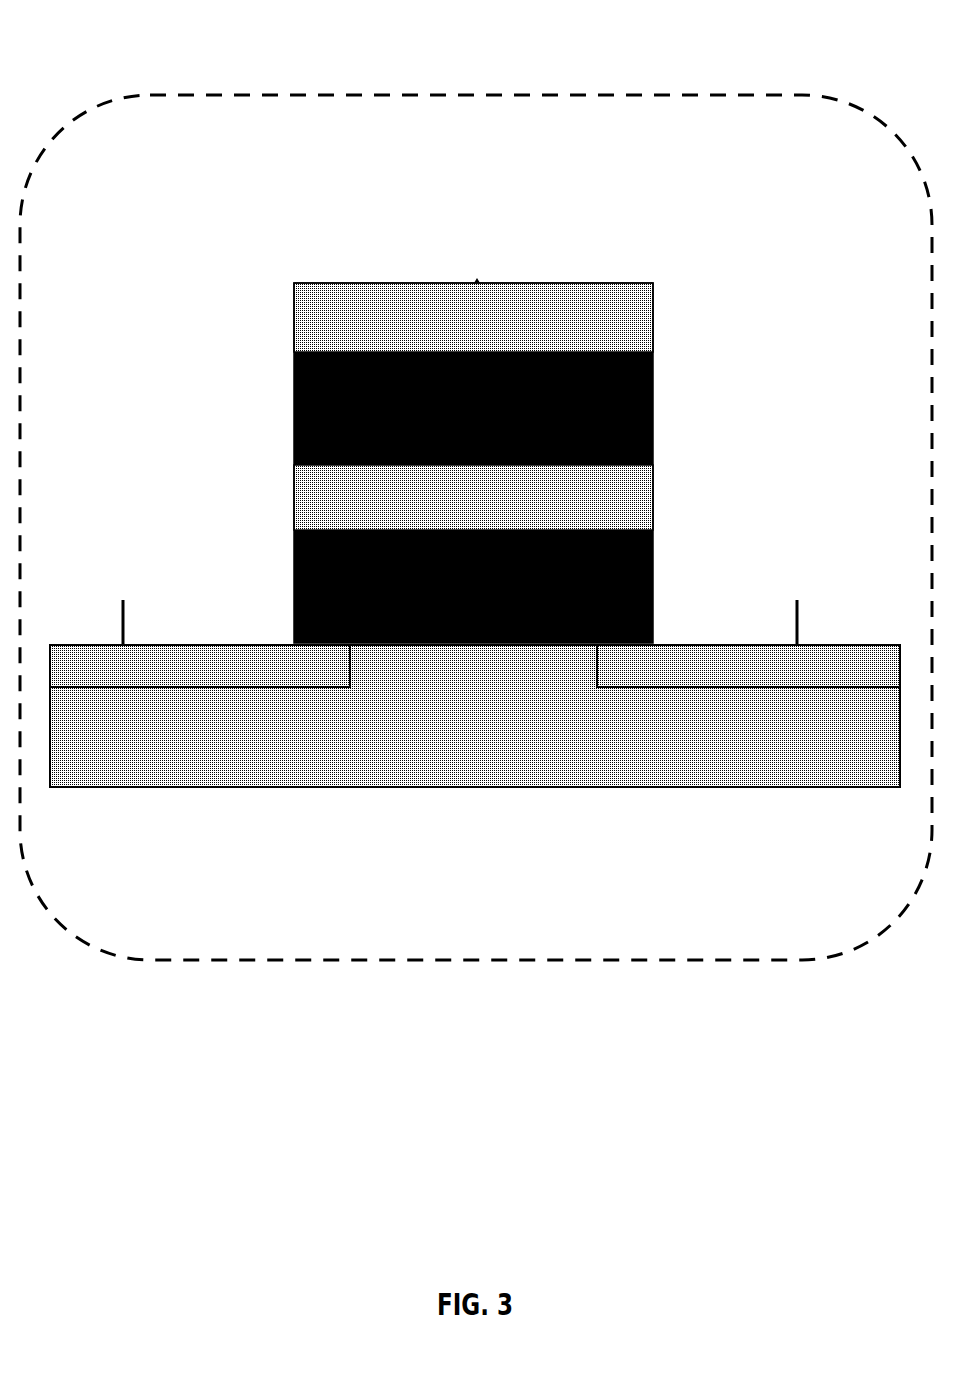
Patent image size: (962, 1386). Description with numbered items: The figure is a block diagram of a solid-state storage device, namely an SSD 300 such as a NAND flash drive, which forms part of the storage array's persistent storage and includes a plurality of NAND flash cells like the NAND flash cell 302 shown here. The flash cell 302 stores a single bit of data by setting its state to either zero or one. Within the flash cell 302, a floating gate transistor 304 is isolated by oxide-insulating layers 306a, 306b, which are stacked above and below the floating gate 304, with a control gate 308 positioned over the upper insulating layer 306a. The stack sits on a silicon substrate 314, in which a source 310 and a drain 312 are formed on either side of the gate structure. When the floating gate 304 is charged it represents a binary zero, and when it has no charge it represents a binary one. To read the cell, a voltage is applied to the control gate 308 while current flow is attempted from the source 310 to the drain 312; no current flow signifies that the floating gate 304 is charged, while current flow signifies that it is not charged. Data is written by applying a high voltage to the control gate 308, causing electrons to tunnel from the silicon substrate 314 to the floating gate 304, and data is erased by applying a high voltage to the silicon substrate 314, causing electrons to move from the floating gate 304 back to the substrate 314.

The SSD 300 is at (493, 908).
The NAND flash cell 302 is at (477, 241).
The floating gate transistor 304 is at (660, 475).
The oxide-insulating layer 306a is at (450, 459).
The oxide-insulating layer 306b is at (450, 637).
The control gate 308 is at (290, 285).
The source 310 is at (101, 679).
The drain 312 is at (771, 679).
The silicon substrate 314 is at (457, 776).